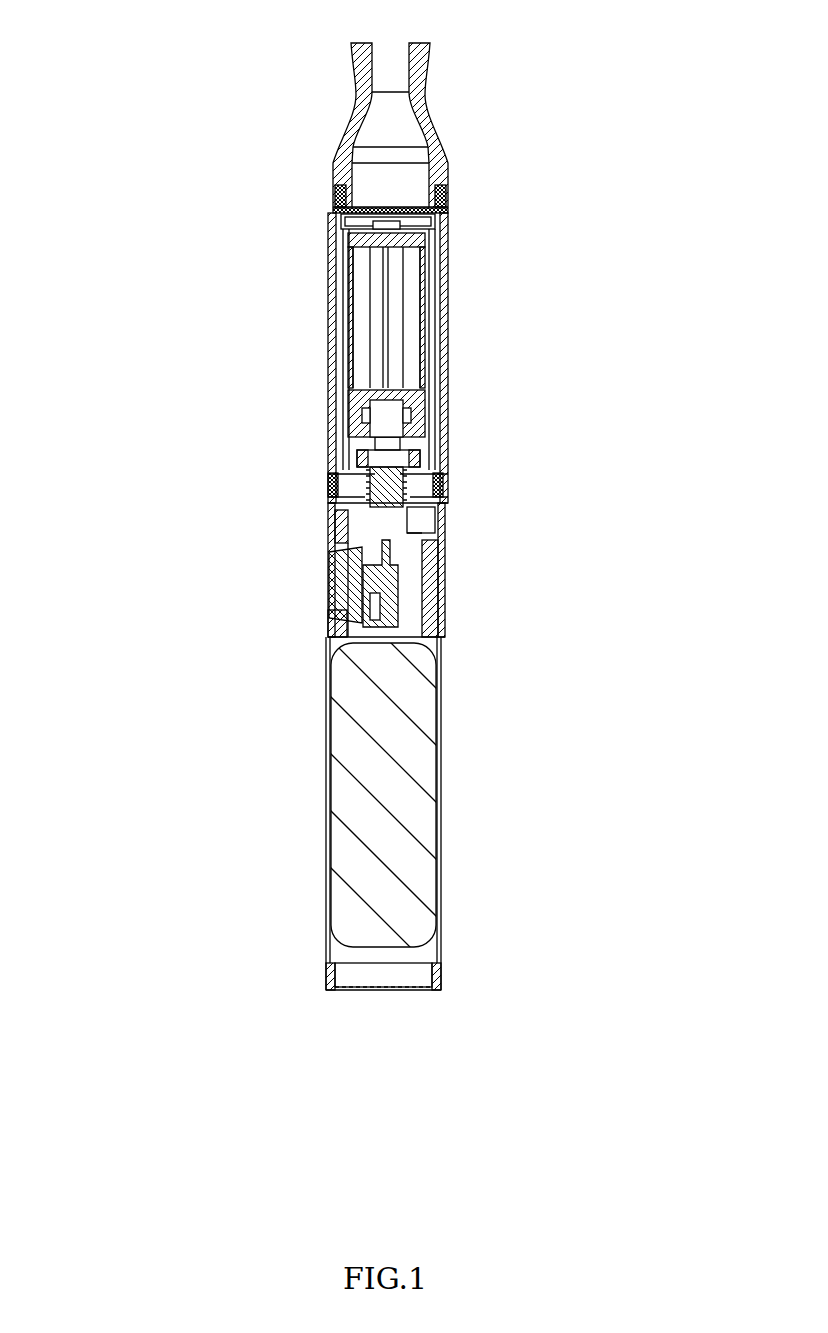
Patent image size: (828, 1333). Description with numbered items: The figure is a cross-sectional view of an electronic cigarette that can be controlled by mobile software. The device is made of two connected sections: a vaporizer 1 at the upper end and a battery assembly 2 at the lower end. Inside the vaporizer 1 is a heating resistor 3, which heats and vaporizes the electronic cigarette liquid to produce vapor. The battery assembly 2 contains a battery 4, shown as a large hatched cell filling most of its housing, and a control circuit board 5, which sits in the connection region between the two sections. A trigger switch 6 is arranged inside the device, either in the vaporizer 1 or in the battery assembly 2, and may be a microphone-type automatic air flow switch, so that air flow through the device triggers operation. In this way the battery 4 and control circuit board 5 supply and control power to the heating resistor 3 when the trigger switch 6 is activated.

The vaporizer 1 is at (443, 363).
The battery assembly 2 is at (440, 768).
The heating resistor 3 is at (378, 402).
The battery 4 is at (372, 830).
The control circuit board 5 is at (440, 590).
The trigger switch 6 is at (400, 590).